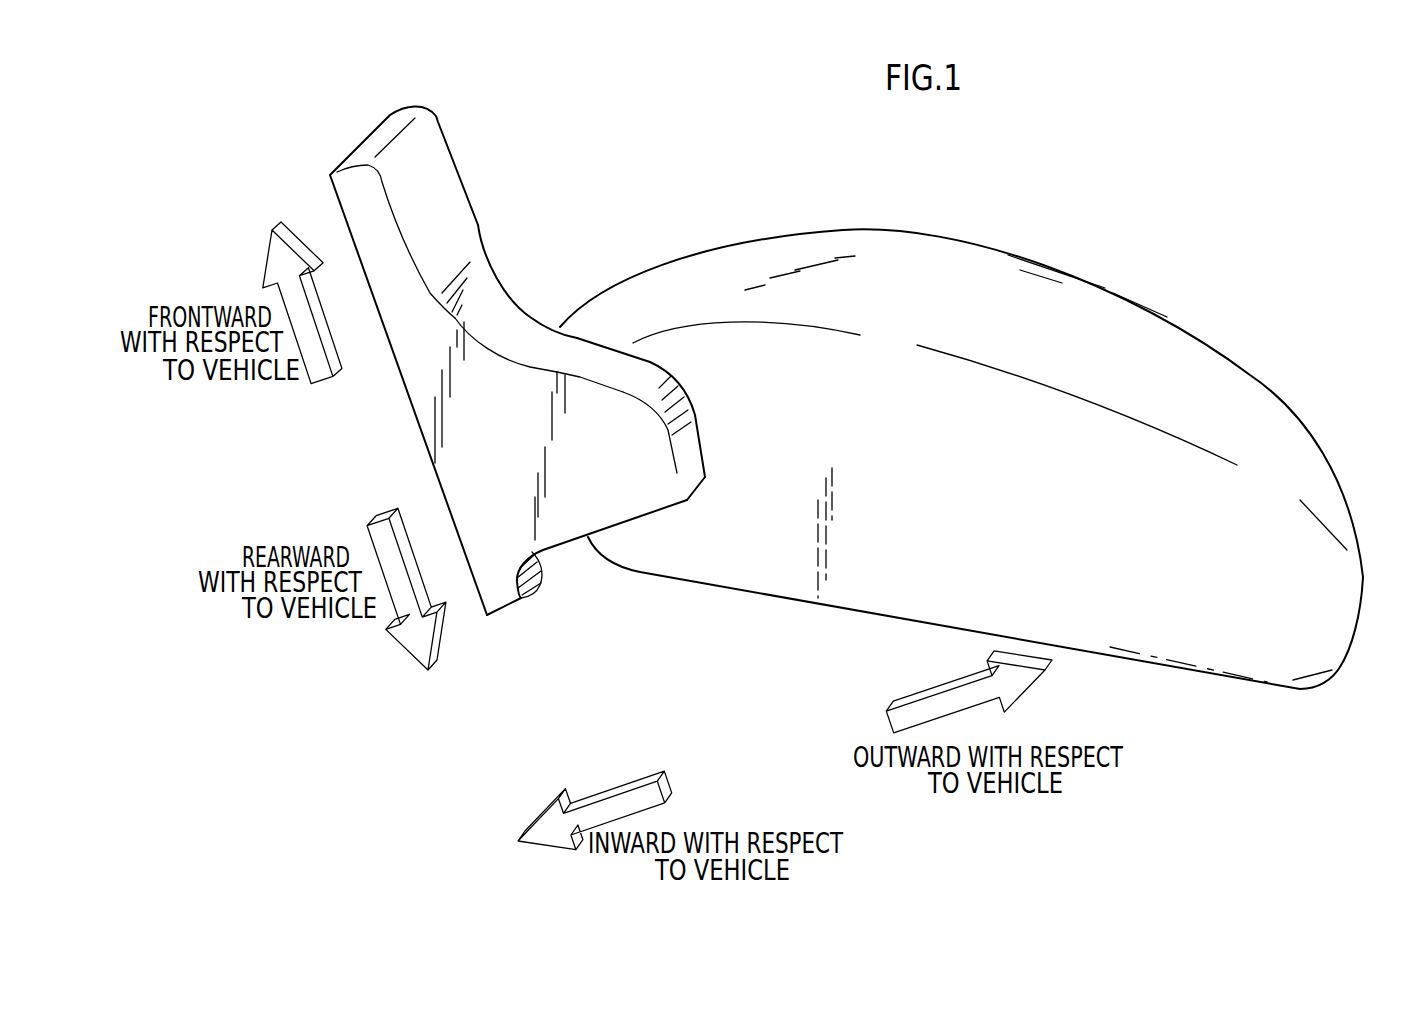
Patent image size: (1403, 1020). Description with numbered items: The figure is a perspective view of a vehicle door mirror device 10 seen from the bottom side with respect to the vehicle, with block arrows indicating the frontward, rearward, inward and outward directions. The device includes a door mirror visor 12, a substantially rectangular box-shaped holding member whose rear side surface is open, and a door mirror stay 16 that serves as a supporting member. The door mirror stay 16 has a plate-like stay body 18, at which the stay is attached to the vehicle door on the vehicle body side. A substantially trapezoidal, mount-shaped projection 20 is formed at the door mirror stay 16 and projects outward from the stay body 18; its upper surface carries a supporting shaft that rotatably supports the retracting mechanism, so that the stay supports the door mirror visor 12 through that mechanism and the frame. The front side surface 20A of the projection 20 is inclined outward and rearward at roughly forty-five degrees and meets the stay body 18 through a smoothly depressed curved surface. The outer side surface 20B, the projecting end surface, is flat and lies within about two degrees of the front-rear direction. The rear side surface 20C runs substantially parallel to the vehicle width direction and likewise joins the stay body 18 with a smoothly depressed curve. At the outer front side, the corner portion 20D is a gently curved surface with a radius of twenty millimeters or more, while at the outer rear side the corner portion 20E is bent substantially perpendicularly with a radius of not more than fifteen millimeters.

The vehicle door mirror device 10 is at (756, 121).
The door mirror visor 12 is at (986, 210).
The door mirror stay 16 is at (470, 140).
The stay body 18 is at (427, 180).
The projection 20 is at (587, 473).
The front side surface 20A is at (582, 353).
The outer side surface 20B is at (683, 436).
The rear side surface 20C is at (616, 522).
The corner portion 20D is at (628, 372).
The corner portion 20E is at (692, 489).